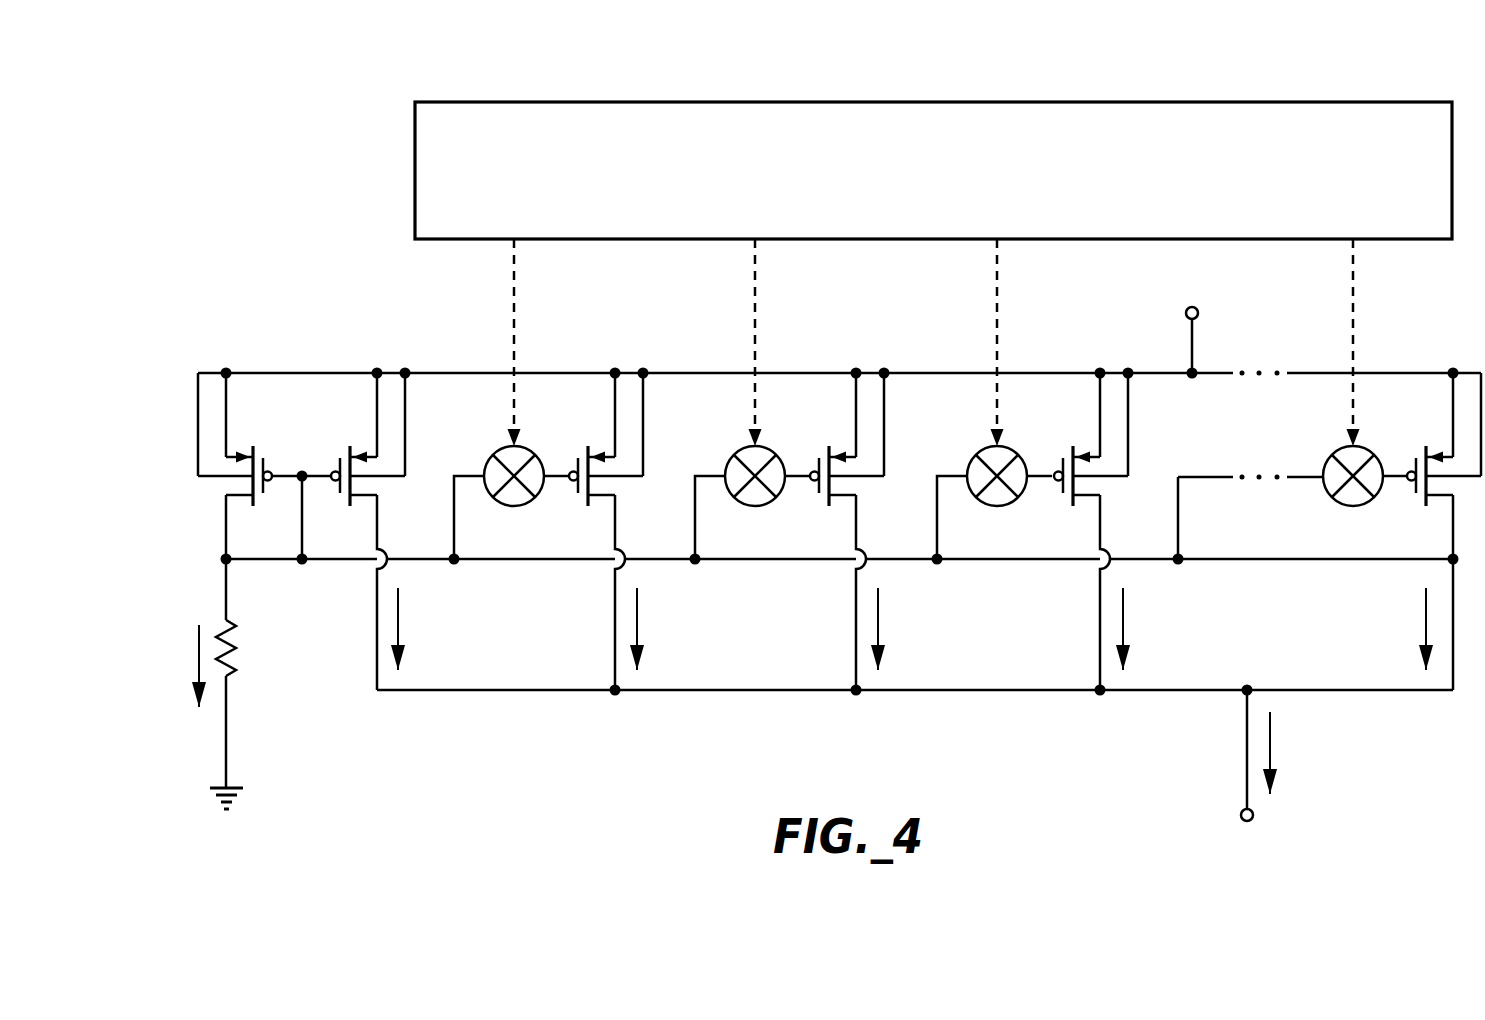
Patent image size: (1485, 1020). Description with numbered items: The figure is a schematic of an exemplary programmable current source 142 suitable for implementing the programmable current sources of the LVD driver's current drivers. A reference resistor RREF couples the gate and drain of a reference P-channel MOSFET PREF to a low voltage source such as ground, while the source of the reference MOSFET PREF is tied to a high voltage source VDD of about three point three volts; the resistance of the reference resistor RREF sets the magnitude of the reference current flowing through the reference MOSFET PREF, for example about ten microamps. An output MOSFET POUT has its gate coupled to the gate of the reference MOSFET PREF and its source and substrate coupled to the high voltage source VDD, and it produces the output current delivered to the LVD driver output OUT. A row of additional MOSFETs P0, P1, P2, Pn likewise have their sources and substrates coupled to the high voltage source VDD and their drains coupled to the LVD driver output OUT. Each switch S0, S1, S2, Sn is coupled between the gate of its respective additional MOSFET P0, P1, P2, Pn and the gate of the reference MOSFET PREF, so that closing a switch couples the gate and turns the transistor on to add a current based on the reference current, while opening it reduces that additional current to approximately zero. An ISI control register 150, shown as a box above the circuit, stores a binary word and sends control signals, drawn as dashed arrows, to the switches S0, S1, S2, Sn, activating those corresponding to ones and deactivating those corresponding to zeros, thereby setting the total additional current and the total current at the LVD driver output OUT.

The programmable current source 142 is at (285, 130).
The ISI control register 150 is at (415, 195).
The high voltage source VDD is at (1189, 322).
The LVD driver output OUT is at (1245, 771).
The reference resistor RREF is at (254, 648).
The reference P-channel MOSFET PREF is at (240, 439).
The output MOSFET POUT is at (358, 531).
The additional MOSFET P0 is at (605, 531).
The additional MOSFET P1 is at (846, 531).
The additional MOSFET P2 is at (1090, 531).
The additional MOSFET Pn is at (1443, 439).
The switch S0 is at (511, 399).
The switch S1 is at (752, 399).
The switch S2 is at (994, 399).
The switch Sn is at (1293, 399).